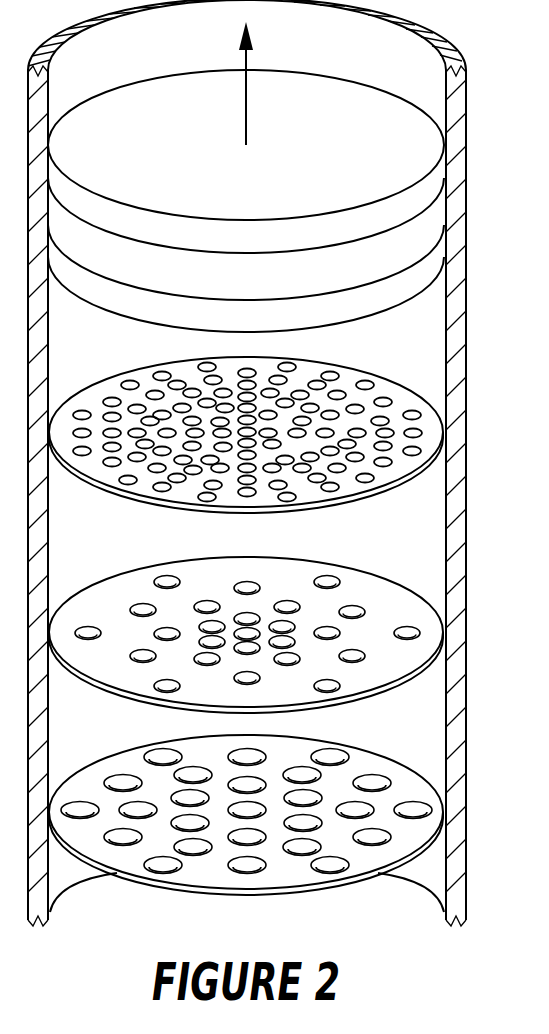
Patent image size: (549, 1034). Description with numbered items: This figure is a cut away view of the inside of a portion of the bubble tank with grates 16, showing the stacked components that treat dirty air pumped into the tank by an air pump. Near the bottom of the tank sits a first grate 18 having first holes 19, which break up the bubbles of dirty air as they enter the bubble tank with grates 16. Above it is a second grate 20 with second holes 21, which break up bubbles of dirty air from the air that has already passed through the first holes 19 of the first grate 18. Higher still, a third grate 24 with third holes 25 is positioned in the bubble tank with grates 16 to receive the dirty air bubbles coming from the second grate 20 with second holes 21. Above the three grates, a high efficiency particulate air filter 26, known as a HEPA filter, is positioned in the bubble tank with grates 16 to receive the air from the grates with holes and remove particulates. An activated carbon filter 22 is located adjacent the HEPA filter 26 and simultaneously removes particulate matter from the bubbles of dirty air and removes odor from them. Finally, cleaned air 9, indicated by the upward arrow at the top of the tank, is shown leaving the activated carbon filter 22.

The cleaned air 9 is at (246, 88).
The bubble tank with grates 16 is at (467, 268).
The first grate 18 is at (367, 760).
The first holes 19 is at (122, 775).
The second grate 20 is at (367, 587).
The second holes 21 is at (146, 602).
The activated carbon filter 22 is at (385, 100).
The third grate 24 is at (385, 393).
The third holes 25 is at (106, 400).
The high efficiency particulate air filter 26 is at (390, 297).